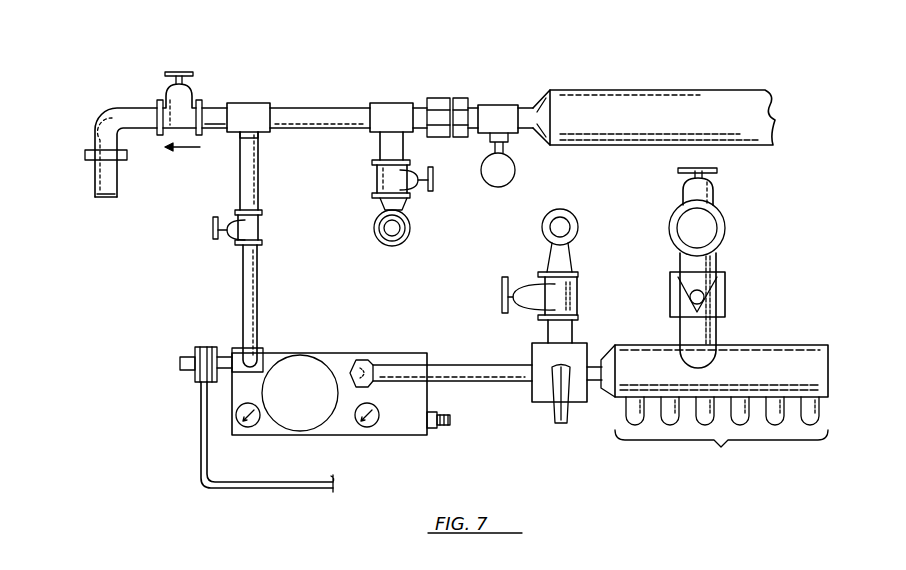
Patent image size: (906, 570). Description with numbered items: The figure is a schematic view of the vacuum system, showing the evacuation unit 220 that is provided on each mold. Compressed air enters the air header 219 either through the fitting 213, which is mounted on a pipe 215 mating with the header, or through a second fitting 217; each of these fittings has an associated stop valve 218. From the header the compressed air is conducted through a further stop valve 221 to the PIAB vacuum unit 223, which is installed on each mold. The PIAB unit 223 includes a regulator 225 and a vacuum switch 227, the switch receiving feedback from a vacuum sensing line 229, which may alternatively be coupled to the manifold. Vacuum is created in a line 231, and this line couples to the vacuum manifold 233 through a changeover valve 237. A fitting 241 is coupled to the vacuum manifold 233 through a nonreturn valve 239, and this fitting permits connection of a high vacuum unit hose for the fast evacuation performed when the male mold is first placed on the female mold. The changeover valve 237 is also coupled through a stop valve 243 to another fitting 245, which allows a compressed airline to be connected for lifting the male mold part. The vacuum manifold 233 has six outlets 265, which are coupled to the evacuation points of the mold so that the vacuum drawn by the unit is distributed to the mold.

The fitting 213 is at (410, 226).
The pipe 215 is at (305, 113).
The second fitting 217 is at (100, 198).
The stop valve 218 is at (186, 94).
The air header 219 is at (673, 92).
The evacuation unit 220 is at (438, 297).
The stop valve 221 is at (252, 228).
The PIAB vacuum unit 223 is at (302, 353).
The regulator 225 is at (262, 350).
The vacuum switch 227 is at (197, 347).
The vacuum sensing line 229 is at (288, 488).
The line 231 is at (482, 383).
The vacuum manifold 233 is at (763, 345).
The changeover valve 237 is at (577, 397).
The nonreturn valve 239 is at (720, 293).
The fitting 241 is at (717, 213).
The stop valve 243 is at (577, 300).
The fitting 245 is at (562, 212).
The outlets 265 is at (721, 451).